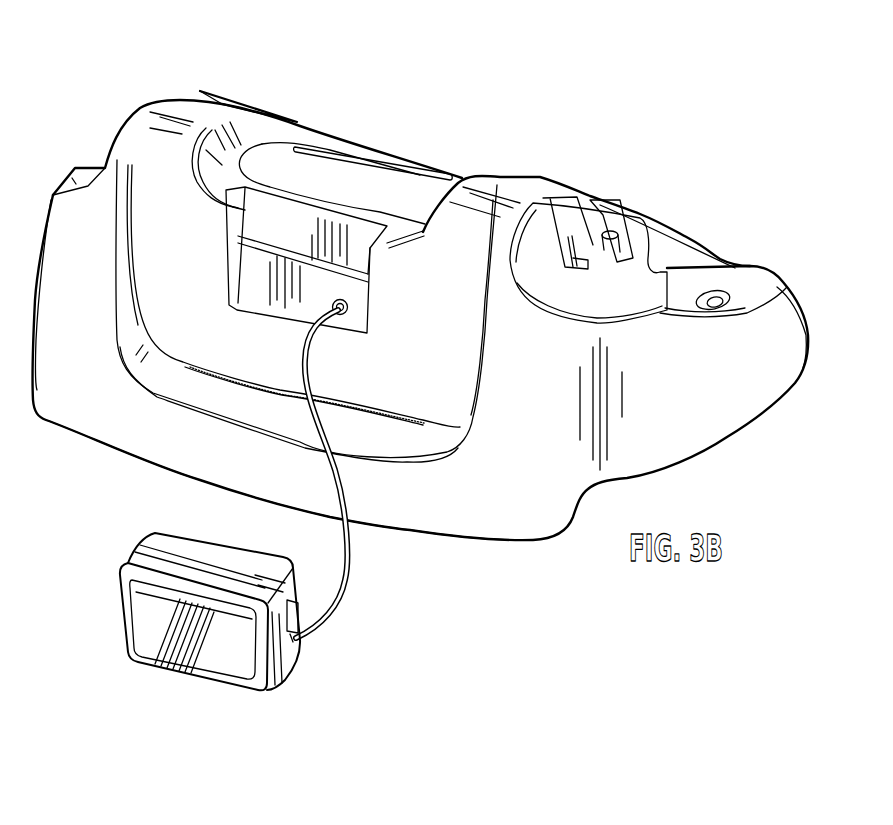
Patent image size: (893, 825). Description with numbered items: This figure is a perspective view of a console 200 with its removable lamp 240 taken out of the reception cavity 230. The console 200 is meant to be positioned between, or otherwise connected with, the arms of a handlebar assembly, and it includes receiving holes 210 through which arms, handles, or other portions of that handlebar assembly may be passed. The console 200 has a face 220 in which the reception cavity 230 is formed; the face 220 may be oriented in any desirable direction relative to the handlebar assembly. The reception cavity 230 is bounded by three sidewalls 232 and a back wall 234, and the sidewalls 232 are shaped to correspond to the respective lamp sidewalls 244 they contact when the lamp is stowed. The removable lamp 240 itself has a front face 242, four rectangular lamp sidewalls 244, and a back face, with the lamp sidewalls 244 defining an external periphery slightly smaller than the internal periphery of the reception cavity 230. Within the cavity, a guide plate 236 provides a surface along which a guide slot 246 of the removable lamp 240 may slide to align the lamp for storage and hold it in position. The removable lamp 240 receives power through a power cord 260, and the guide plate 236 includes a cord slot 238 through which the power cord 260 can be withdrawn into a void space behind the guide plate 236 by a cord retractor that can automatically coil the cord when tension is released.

The console 200 is at (620, 118).
The receiving holes 210 is at (83, 156).
The face 220 is at (472, 508).
The reception cavity 230 is at (351, 201).
The sidewalls 232 is at (226, 218).
The back wall 234 is at (262, 212).
The guide plate 236 is at (247, 267).
The cord slot 238 is at (348, 302).
The removable lamp 240 is at (111, 536).
The front face 242 is at (177, 664).
The lamp sidewalls 244 is at (154, 536).
The guide slot 246 is at (294, 586).
The power cord 260 is at (325, 618).